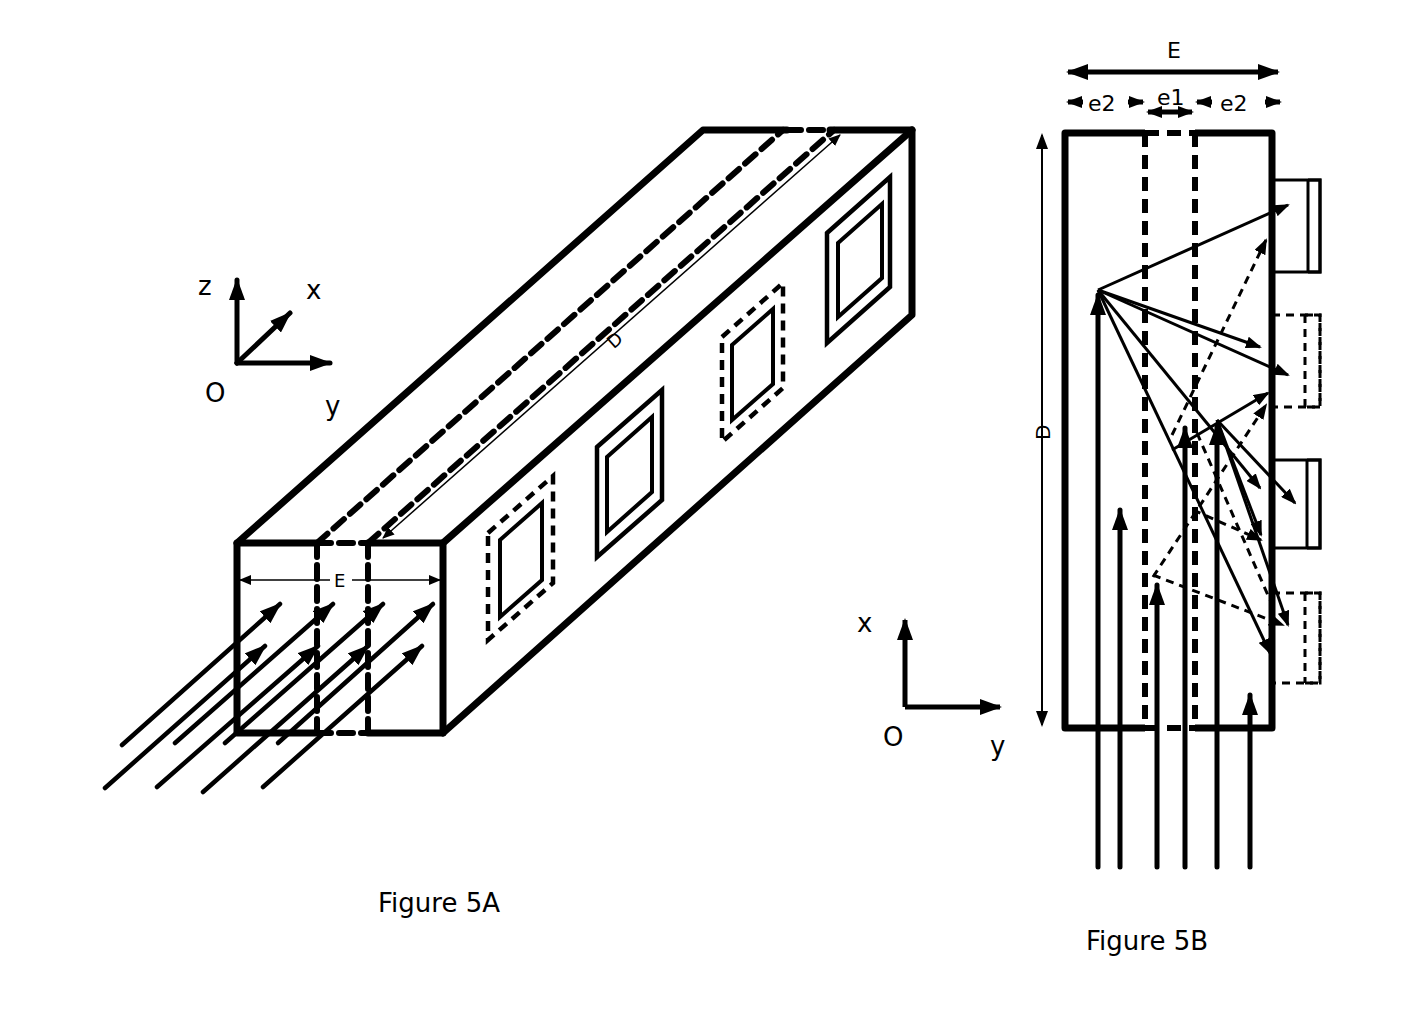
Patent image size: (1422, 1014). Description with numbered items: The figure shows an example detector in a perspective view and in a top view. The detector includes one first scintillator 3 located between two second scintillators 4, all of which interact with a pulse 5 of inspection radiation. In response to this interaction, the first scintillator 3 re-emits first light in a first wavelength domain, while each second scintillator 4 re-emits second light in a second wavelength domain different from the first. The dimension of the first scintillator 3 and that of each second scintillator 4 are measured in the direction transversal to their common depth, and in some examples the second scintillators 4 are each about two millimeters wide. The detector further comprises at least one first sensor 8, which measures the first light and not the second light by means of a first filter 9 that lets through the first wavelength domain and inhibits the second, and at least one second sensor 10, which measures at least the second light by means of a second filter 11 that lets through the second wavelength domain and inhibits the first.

In FIG. 5A, the first scintillator 3 is at (657, 242).
In FIG. 5B, the first scintillator 3 is at (1179, 213).
In FIG. 5A, the second scintillator 4 is at (676, 152).
In FIG. 5B, the second scintillator 4 is at (1124, 213).
In FIG. 5A, the pulse of inspection radiation 5 is at (322, 754).
In FIG. 5B, the pulse of inspection radiation 5 is at (1083, 808).
In FIG. 5A, the first sensor 8 is at (525, 583).
In FIG. 5B, the first sensor 8 is at (1320, 327).
In FIG. 5A, the first filter 9 is at (498, 635).
In FIG. 5B, the first filter 9 is at (1292, 327).
In FIG. 5A, the second sensor 10 is at (633, 477).
In FIG. 5B, the second sensor 10 is at (1313, 193).
In FIG. 5A, the second filter 11 is at (607, 535).
In FIG. 5B, the second filter 11 is at (1290, 180).